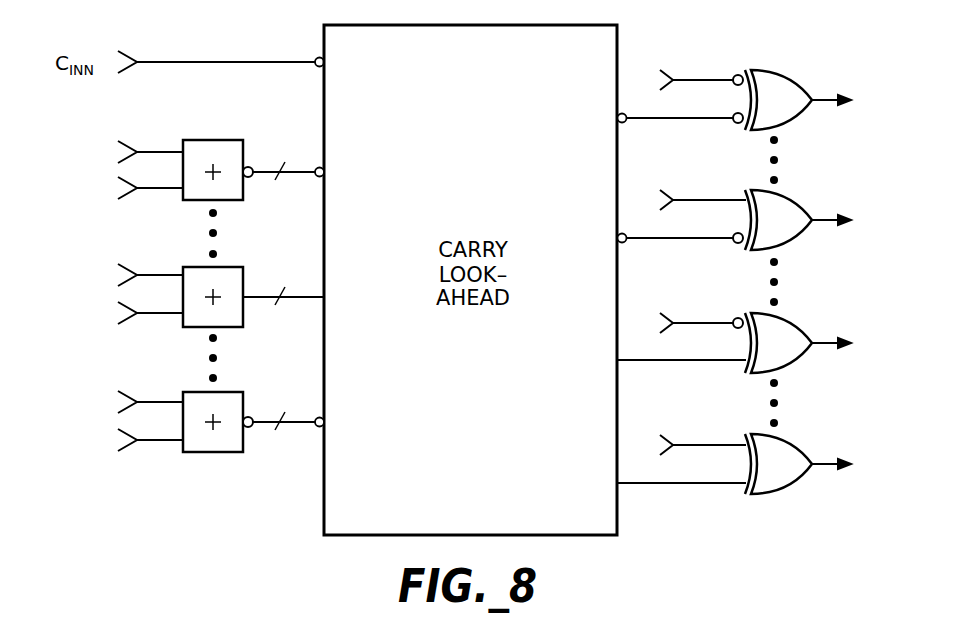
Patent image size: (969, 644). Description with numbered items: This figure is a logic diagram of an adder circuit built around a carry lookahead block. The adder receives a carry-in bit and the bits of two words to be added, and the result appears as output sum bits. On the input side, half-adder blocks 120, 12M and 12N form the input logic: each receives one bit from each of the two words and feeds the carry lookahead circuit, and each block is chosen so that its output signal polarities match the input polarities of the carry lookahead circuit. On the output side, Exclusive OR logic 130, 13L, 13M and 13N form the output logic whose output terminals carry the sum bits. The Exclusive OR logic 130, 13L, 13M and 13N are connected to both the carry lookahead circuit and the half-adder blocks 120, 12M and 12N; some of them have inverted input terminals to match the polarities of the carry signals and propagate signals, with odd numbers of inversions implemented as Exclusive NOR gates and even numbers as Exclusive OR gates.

The half-adder block 120 is at (212, 155).
The half-adder block 12M is at (195, 320).
The half-adder block 12N is at (200, 452).
The Exclusive OR logic 130 is at (785, 87).
The Exclusive OR logic 13L is at (785, 207).
The Exclusive OR logic 13M is at (785, 330).
The Exclusive OR logic 13N is at (785, 452).